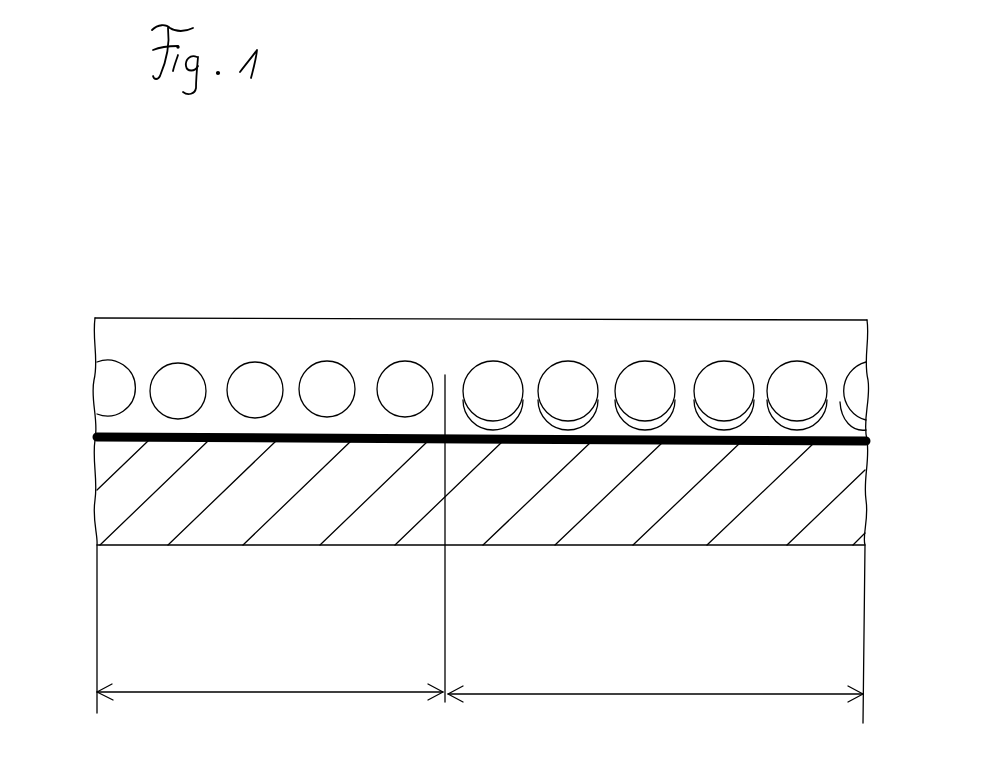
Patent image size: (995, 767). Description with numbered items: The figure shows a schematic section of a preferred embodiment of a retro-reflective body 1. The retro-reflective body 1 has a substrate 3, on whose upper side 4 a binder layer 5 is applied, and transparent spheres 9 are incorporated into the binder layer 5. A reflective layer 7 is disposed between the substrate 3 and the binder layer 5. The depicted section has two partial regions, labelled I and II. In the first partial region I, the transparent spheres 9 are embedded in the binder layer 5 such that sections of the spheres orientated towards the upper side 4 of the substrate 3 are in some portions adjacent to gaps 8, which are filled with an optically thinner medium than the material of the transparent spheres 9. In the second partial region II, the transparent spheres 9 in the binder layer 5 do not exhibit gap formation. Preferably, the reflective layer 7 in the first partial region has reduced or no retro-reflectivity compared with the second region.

The retro-reflective body 1 is at (594, 276).
The substrate 3 is at (833, 478).
The upper side 4 is at (175, 443).
The binder layer 5 is at (151, 336).
The reflective layer 7 is at (290, 445).
The gaps 8 is at (710, 428).
The transparent spheres 9 is at (183, 380).